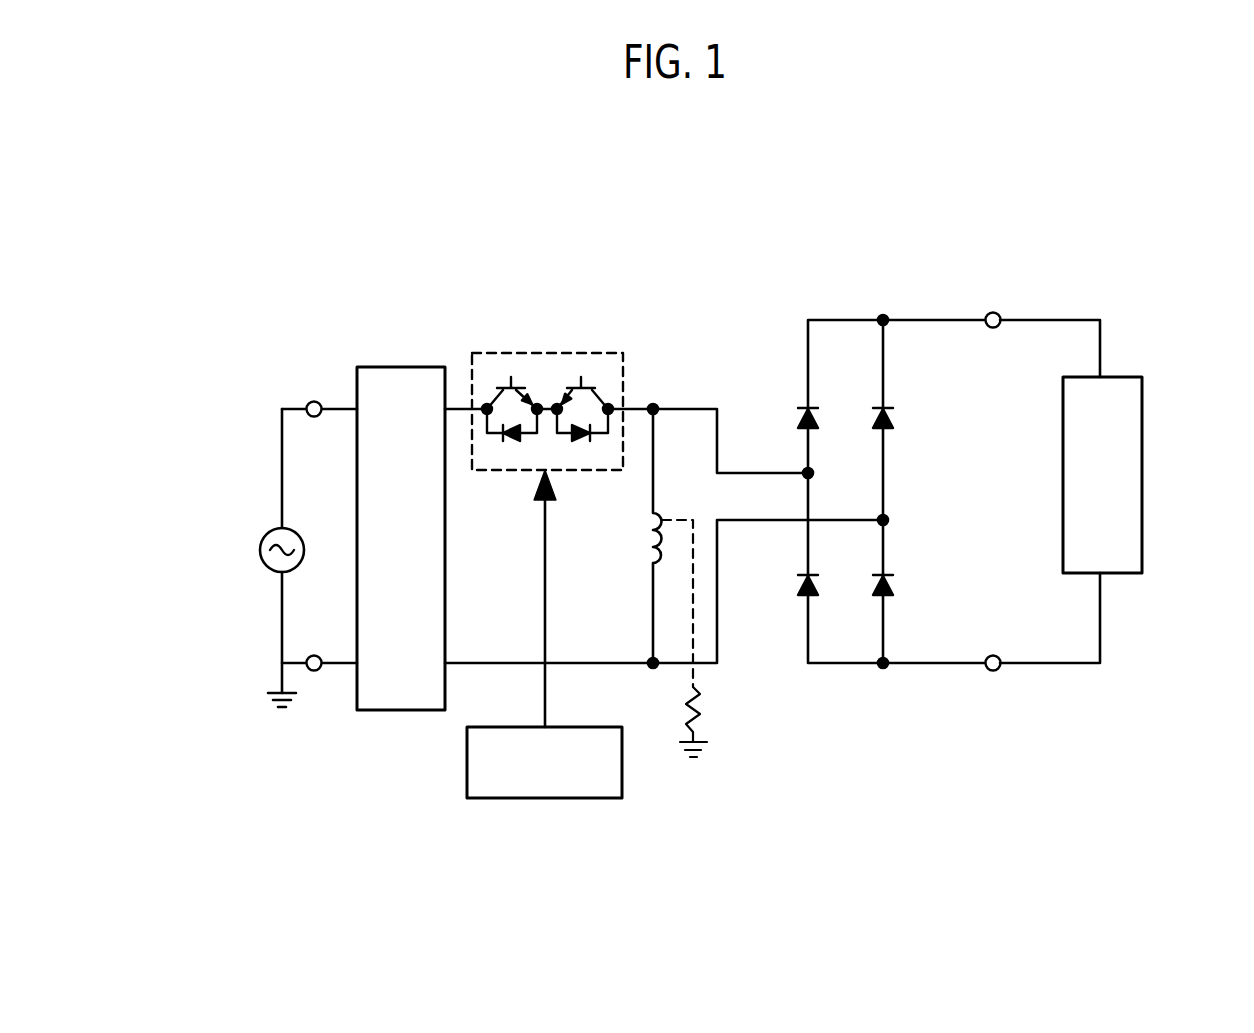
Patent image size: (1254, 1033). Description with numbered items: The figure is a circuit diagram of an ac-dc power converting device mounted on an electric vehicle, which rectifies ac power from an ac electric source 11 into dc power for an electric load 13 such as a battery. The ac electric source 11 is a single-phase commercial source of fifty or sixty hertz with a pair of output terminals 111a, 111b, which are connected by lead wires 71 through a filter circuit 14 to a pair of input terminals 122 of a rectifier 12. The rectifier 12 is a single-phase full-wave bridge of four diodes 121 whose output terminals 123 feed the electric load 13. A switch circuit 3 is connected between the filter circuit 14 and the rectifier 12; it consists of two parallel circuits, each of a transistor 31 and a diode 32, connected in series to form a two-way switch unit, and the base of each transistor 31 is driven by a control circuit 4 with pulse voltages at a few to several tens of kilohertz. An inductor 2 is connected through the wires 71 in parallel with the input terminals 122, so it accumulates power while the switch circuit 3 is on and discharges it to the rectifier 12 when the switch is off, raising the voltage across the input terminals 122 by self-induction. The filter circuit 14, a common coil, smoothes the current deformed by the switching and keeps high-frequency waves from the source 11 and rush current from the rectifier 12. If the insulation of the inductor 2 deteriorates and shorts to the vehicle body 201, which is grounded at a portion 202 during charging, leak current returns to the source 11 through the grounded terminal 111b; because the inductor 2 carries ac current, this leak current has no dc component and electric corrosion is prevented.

The ac electric source 11 is at (260, 538).
The output terminal 111a is at (308, 402).
The output terminal 111b is at (316, 671).
The filter circuit 14 is at (377, 367).
The switch circuit 3 is at (557, 353).
The transistor 31 is at (508, 385).
The diode 32 is at (518, 440).
The lead wires 71 is at (680, 408).
The inductor 2 is at (663, 558).
The vehicle body 201 is at (706, 712).
The grounded portion 202 is at (695, 762).
The control circuit 4 is at (537, 798).
The rectifier 12 is at (836, 296).
The diodes 121 is at (892, 425).
The input terminals 122 is at (806, 472).
The output terminals 123 is at (1000, 313).
The electric load 13 is at (1143, 378).